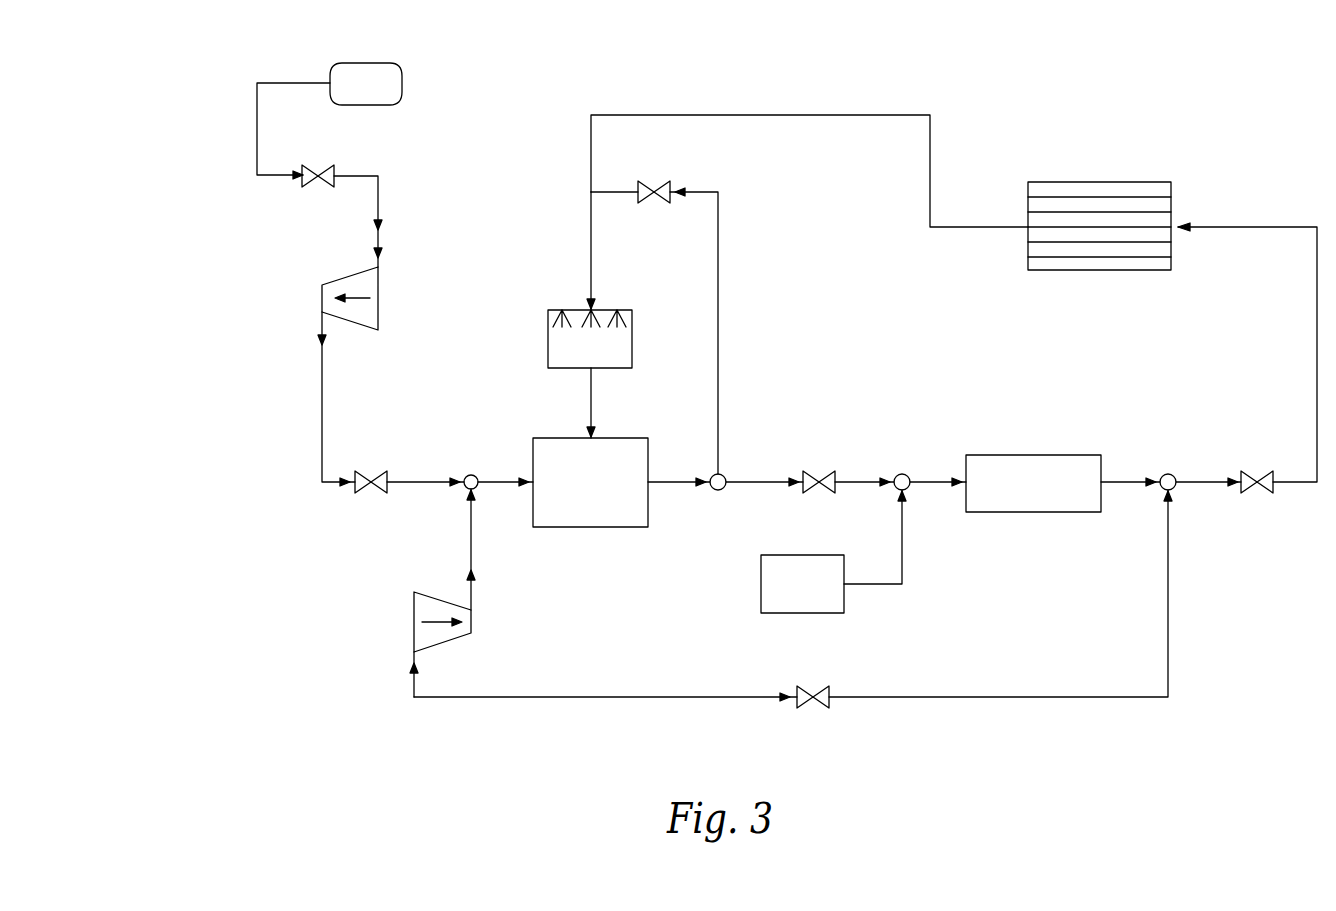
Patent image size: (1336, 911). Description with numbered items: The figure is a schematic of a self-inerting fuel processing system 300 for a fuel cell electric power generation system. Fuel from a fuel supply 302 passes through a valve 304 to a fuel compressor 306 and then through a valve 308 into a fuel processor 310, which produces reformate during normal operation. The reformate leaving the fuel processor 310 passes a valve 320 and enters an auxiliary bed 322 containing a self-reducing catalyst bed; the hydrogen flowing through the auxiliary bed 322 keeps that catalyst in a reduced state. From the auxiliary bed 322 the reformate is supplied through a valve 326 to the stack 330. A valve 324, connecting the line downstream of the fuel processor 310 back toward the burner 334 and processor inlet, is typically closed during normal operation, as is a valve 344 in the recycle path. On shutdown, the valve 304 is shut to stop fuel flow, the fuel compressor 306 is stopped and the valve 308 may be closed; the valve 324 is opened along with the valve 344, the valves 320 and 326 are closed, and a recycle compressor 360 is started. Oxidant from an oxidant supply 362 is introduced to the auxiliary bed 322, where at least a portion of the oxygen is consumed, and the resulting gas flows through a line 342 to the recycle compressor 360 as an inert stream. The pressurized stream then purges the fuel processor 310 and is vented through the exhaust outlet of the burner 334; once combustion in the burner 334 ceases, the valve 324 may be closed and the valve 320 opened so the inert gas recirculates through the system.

The fuel processing system 300 is at (876, 378).
The fuel supply 302 is at (370, 63).
The valve 304 is at (318, 178).
The fuel compressor 306 is at (379, 298).
The valve 308 is at (371, 486).
The fuel processor 310 is at (668, 482).
The valve 320 is at (820, 484).
The auxiliary bed 322 is at (1103, 483).
The valve 324 is at (655, 192).
The valve 326 is at (1257, 481).
The stack 330 is at (1083, 181).
The burner 334 is at (590, 315).
The line 342 is at (1168, 622).
The valve 344 is at (813, 702).
The recycle compressor 360 is at (414, 620).
The oxidant supply 362 is at (833, 551).